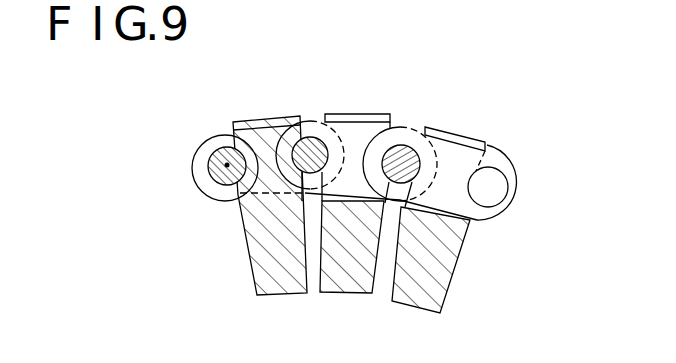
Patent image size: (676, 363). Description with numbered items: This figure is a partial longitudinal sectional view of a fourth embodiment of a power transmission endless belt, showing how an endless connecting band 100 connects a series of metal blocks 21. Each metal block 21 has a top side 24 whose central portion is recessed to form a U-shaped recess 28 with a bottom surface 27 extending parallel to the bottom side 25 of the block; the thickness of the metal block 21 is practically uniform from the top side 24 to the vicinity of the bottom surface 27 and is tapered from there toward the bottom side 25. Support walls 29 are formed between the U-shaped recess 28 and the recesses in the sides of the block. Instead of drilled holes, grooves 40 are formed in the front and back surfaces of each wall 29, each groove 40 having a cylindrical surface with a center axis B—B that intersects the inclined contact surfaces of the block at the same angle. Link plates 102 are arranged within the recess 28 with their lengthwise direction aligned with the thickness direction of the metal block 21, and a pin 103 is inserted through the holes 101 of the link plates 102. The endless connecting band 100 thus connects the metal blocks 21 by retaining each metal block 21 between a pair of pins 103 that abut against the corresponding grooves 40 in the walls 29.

The endless connecting band 100 is at (412, 150).
The metal block 21 is at (494, 141).
The holes 101 is at (508, 193).
The link plates 102 is at (204, 175).
The pin 103 is at (217, 147).
The top side 24 is at (366, 104).
The U-shaped recess 28 is at (446, 122).
The support walls 29 is at (257, 127).
The grooves 40 is at (293, 137).
The bottom side 25 is at (374, 239).
The bottom surface 27 is at (473, 226).
The center axis B— B is at (227, 167).